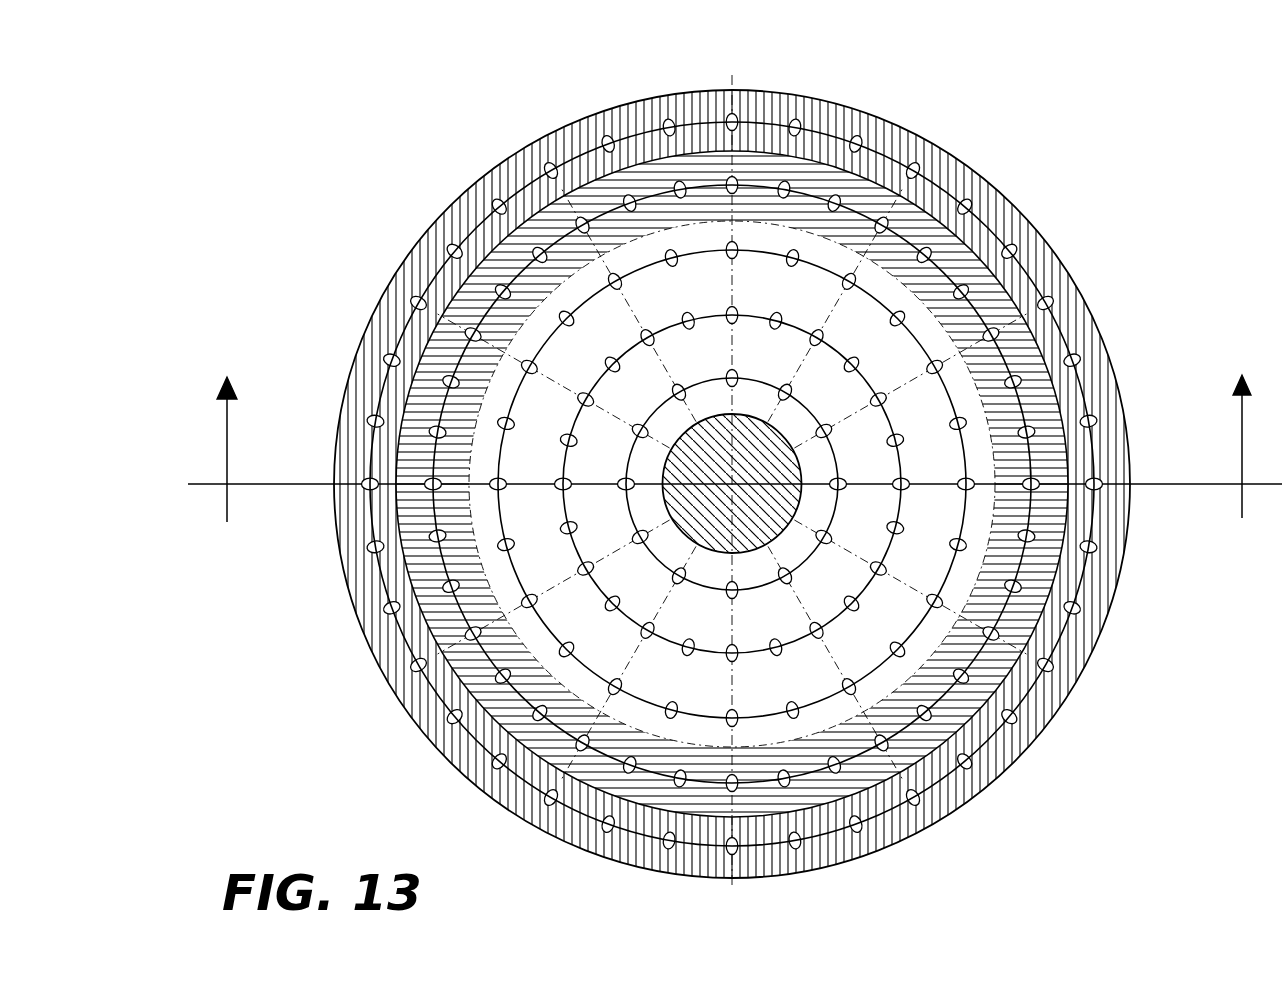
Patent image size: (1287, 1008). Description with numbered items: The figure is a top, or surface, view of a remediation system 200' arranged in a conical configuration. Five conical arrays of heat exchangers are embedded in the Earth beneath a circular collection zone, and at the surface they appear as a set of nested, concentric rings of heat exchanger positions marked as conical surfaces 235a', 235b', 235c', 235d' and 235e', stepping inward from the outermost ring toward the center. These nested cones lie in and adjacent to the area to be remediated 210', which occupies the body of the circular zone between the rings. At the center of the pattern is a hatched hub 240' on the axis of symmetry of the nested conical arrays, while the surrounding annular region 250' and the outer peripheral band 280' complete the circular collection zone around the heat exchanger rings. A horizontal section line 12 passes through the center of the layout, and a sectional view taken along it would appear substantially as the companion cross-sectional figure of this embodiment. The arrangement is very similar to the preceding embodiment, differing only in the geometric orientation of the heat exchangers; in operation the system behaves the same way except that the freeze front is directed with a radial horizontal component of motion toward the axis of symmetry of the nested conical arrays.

The system 200' is at (735, 457).
The area to be remediated 210' is at (732, 402).
The conical surface 235a' is at (725, 484).
The conical surface 235b' is at (725, 484).
The conical surface 235c' is at (726, 484).
The conical surface 235d' is at (728, 484).
The conical surface 235e' is at (727, 484).
The central hub 240' is at (773, 289).
The intermediate annular region 250' is at (732, 440).
The peripheral rim 280' is at (732, 470).
The section line 12 is at (738, 426).